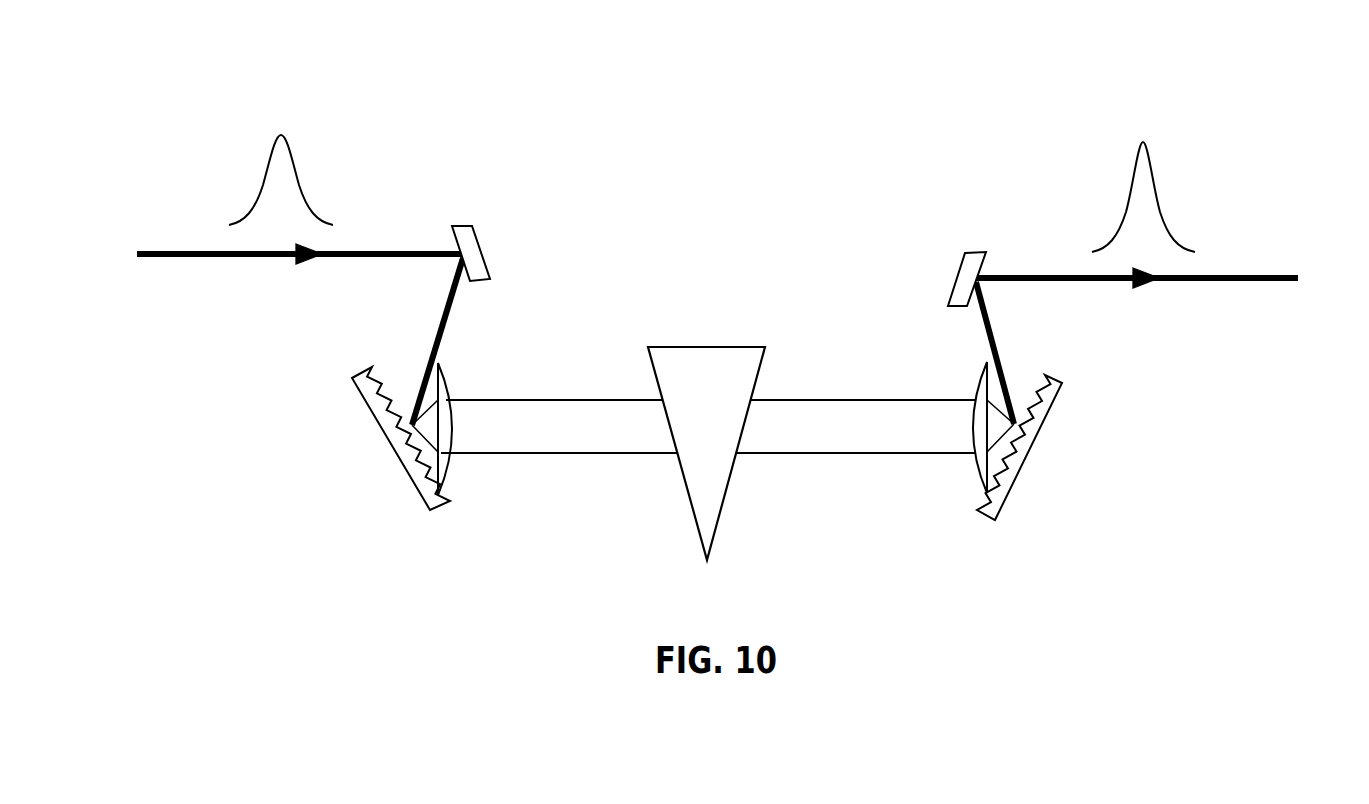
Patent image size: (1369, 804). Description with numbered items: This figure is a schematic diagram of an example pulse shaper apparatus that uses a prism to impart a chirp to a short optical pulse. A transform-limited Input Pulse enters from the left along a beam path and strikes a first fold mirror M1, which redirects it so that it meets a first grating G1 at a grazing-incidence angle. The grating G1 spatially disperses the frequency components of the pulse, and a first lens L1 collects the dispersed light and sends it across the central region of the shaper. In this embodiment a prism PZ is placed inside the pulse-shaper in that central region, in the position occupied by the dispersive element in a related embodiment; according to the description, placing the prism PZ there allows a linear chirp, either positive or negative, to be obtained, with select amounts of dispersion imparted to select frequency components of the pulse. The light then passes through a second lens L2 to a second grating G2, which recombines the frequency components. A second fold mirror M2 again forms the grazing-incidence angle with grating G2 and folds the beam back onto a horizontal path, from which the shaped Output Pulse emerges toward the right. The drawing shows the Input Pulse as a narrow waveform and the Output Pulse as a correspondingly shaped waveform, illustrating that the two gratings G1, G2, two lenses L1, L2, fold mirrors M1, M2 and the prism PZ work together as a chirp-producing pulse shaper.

The fold mirror M1 is at (476, 243).
The fold mirror M2 is at (958, 260).
The grating G1 is at (353, 378).
The grating G2 is at (1062, 383).
The lens L1 is at (446, 382).
The lens L2 is at (980, 373).
The prism PZ is at (730, 417).
The input pulse Input Pulse is at (281, 137).
The output pulse Output Pulse is at (1150, 157).